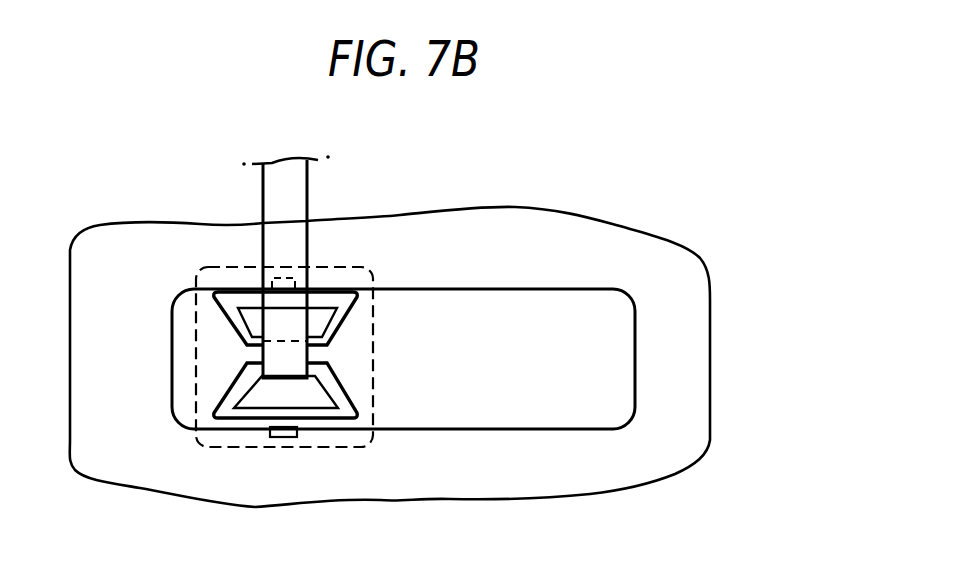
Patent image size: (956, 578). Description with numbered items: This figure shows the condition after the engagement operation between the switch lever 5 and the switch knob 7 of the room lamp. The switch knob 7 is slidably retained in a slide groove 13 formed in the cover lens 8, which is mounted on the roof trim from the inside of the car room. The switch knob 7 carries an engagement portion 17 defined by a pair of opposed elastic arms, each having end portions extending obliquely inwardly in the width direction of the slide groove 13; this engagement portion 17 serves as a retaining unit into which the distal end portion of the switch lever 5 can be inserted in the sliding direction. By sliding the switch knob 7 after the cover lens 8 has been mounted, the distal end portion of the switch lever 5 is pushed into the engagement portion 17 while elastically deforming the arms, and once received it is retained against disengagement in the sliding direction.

The switch lever 5 is at (285, 192).
The switch knob 7 is at (376, 378).
The cover lens 8 is at (605, 274).
The slide groove 13 is at (630, 378).
The engagement portion 17 is at (244, 355).